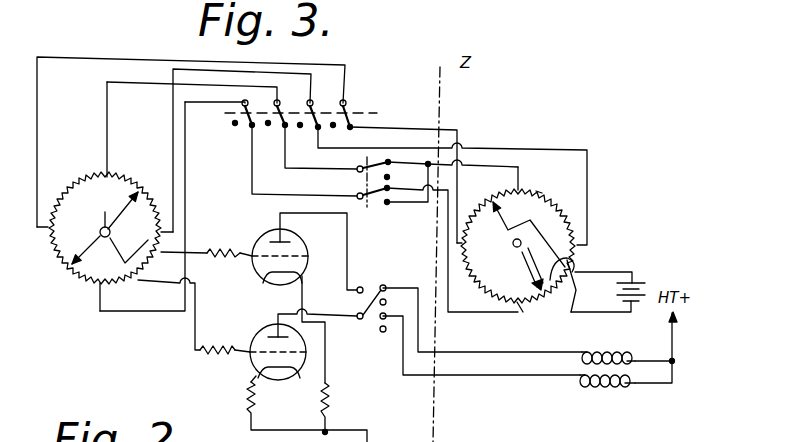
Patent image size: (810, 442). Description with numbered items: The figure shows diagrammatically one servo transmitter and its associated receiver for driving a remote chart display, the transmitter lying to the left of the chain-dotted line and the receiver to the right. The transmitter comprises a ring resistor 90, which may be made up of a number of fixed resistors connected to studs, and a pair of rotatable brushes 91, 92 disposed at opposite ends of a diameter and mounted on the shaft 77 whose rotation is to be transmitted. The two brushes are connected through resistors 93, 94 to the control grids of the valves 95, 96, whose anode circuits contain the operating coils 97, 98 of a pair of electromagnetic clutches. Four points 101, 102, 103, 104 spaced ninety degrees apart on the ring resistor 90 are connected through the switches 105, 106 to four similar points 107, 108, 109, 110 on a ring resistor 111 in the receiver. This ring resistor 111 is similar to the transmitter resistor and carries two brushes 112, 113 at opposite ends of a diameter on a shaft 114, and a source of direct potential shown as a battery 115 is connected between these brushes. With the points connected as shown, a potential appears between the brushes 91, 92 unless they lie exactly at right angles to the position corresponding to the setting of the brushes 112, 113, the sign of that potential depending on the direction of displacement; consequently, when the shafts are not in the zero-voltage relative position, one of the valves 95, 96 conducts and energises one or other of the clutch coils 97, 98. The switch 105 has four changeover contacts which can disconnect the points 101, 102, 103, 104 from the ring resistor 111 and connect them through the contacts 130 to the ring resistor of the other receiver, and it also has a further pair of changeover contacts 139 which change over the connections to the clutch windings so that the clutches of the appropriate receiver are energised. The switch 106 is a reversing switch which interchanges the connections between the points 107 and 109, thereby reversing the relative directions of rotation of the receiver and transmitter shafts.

The shaft 77 is at (97, 212).
The ring resistor 90 is at (72, 266).
The rotatable brush 91 is at (74, 268).
The rotatable brush 92 is at (103, 176).
The resistor 93 is at (226, 250).
The resistor 94 is at (215, 352).
The valve 95 is at (298, 229).
The valve 96 is at (258, 333).
The operating coil 97 is at (605, 355).
The operating coil 98 is at (607, 388).
The point 101 is at (108, 178).
The point 102 is at (160, 233).
The point 103 is at (100, 292).
The point 104 is at (50, 232).
The switch 105 is at (362, 113).
The reversing switch 106 is at (368, 207).
The point 107 is at (520, 177).
The point 108 is at (577, 245).
The point 109 is at (523, 312).
The point 110 is at (461, 248).
The ring resistor 111 is at (540, 191).
The brush 112 is at (538, 213).
The brush 113 is at (545, 285).
The shaft 114 is at (514, 246).
The battery 115 is at (632, 284).
The contacts 130 is at (333, 125).
The changeover contacts 139 is at (373, 280).